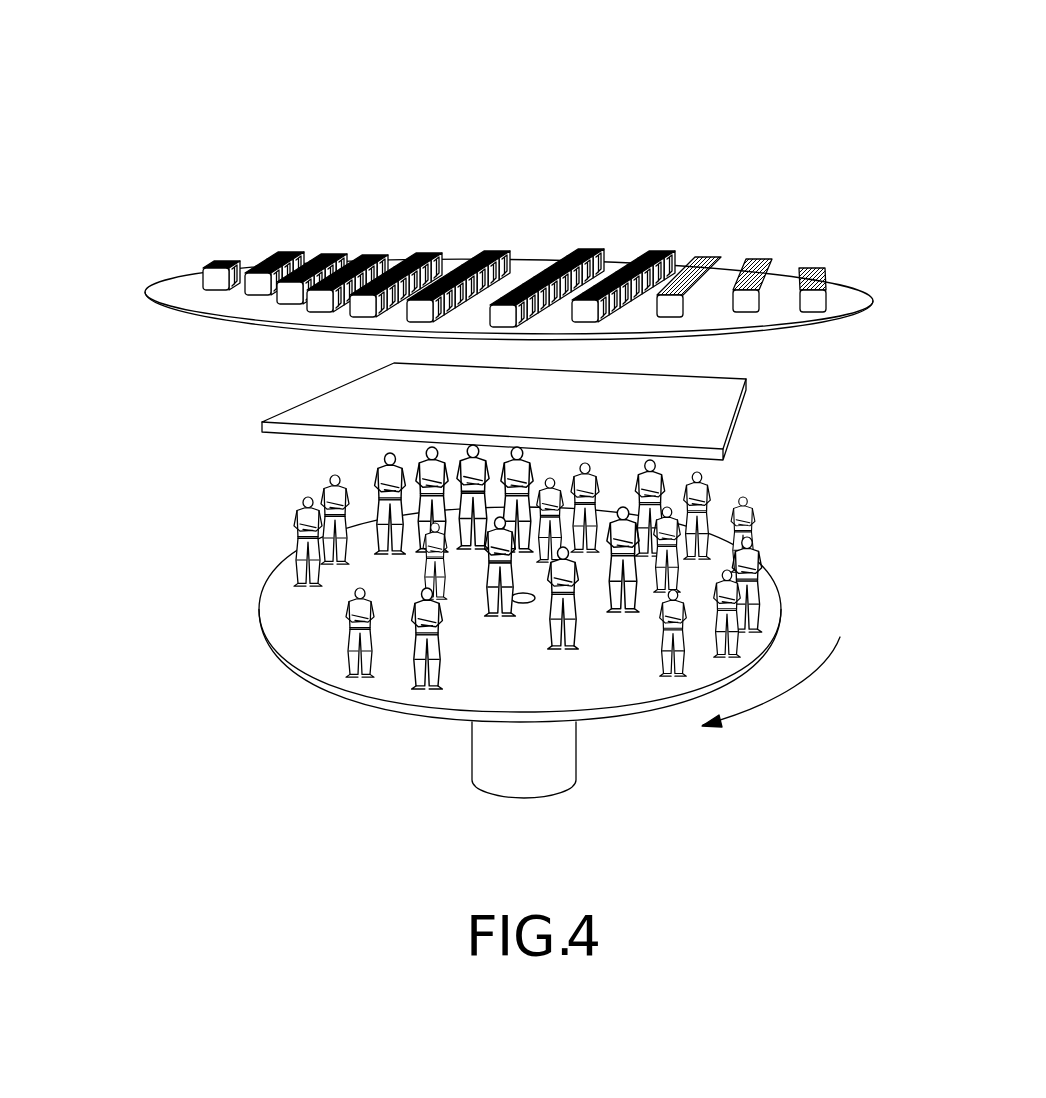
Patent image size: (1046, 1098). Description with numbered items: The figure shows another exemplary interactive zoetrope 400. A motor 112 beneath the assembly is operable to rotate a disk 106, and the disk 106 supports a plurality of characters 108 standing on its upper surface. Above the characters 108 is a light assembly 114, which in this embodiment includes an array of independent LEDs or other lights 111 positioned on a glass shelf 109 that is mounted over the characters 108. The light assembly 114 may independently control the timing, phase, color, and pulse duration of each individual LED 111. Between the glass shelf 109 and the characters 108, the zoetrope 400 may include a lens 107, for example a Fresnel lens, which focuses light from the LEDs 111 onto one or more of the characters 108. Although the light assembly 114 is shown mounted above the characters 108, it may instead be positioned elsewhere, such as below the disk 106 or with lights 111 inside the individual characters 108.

The interactive zoetrope 400 is at (852, 92).
The light assembly 114 is at (110, 235).
The LED 111 is at (770, 262).
The glass shelf 109 is at (855, 314).
The lens 107 is at (728, 440).
The disk 106 is at (780, 594).
The character 108 is at (350, 650).
The motor 112 is at (562, 760).